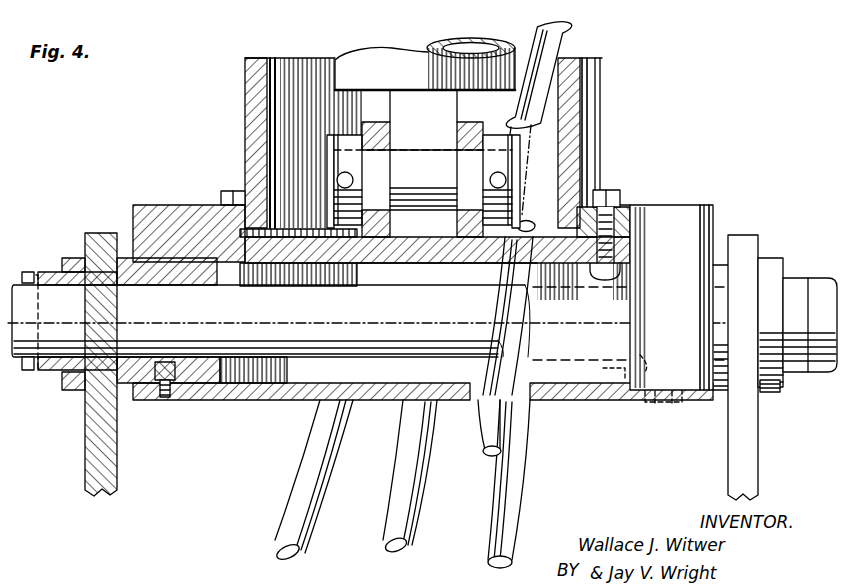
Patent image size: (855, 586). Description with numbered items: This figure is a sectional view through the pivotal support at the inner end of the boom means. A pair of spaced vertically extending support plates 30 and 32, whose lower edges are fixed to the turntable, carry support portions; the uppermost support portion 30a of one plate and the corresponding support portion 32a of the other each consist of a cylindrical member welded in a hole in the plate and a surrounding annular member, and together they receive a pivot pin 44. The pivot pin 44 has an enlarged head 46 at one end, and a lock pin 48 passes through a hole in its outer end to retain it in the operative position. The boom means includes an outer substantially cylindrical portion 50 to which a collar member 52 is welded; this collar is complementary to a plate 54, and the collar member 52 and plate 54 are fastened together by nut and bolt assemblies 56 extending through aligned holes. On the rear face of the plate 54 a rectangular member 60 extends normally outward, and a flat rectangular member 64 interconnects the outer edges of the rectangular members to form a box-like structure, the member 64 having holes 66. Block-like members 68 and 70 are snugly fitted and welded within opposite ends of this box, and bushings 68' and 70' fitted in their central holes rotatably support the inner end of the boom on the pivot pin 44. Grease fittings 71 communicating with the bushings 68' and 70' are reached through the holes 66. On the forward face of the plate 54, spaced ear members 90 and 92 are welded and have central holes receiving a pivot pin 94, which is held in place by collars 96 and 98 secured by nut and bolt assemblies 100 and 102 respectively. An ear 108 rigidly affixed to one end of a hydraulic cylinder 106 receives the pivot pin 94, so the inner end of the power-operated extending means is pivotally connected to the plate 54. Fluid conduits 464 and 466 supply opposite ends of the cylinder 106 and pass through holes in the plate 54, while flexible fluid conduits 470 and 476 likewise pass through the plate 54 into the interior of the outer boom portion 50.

The support plate 30 is at (92, 460).
The support portion 30a is at (77, 399).
The support plate 32 is at (745, 450).
The support portion 32a is at (787, 386).
The pivot pin 44 is at (422, 322).
The enlarged head 46 is at (816, 287).
The lock pin 48 is at (28, 271).
The outer boom portion 50 is at (256, 103).
The collar member 52 is at (648, 207).
The plate 54 is at (436, 250).
The nut and bolt assemblies 56 is at (235, 183).
The rectangular member 60 is at (679, 297).
The flat rectangular member 64 is at (266, 400).
The holes 66 is at (178, 397).
The block-like member 68 is at (162, 320).
The bushing 68' is at (256, 338).
The block-like member 70 is at (595, 353).
The bushing 70' is at (631, 349).
The grease fittings 71 is at (162, 397).
The ear member 90 is at (368, 122).
The ear member 92 is at (467, 124).
The pivot pin 94 is at (328, 163).
The collar 96 is at (335, 135).
The collar 98 is at (517, 222).
The nut and bolt assembly 100 is at (337, 183).
The nut and bolt assembly 102 is at (490, 181).
The hydraulic cylinder 106 is at (478, 42).
The ear 108 is at (392, 98).
The fluid conduit 464 is at (518, 512).
The fluid conduit 466 is at (388, 533).
The flexible fluid conduit 470 is at (290, 503).
The flexible fluid conduit 476 is at (530, 312).